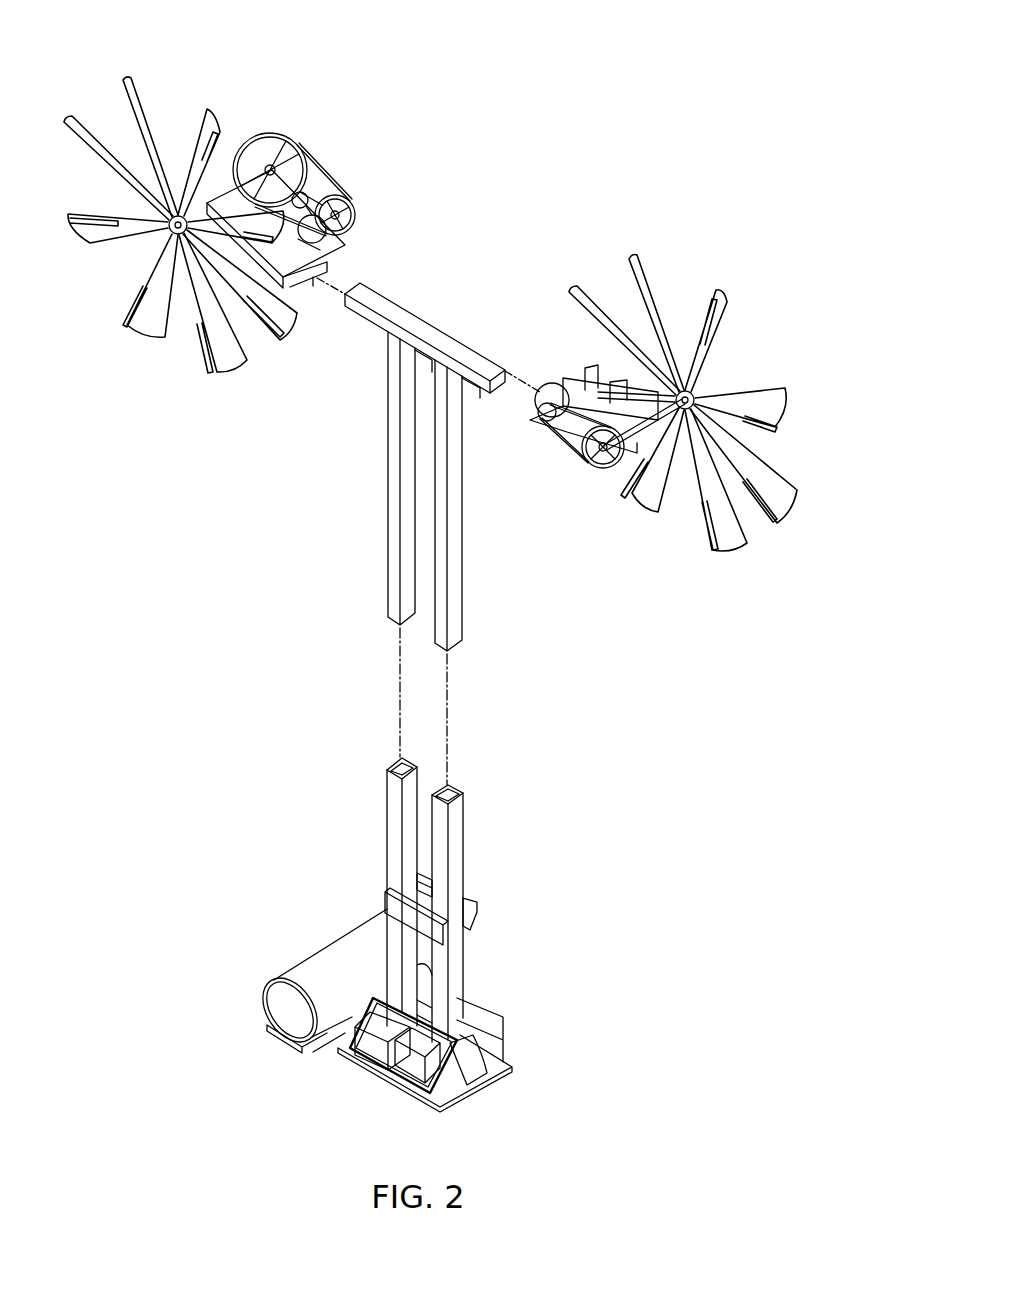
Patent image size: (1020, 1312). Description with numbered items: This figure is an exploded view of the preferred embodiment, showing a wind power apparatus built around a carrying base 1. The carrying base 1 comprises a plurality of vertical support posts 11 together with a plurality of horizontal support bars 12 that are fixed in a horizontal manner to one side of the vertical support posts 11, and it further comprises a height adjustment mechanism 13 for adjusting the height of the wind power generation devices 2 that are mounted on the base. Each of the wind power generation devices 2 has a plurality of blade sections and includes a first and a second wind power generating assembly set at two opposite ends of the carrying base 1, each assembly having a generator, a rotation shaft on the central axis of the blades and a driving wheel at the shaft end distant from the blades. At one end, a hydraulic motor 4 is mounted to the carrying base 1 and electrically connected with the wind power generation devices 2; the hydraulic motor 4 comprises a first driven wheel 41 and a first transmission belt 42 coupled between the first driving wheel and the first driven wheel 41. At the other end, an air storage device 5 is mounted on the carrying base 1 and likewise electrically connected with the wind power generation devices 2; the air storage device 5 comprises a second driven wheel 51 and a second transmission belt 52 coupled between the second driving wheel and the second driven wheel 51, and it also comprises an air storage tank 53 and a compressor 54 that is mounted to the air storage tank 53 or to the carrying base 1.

The carrying base 1 is at (228, 468).
The vertical support posts 11 is at (390, 582).
The horizontal support bars 12 is at (313, 277).
The height adjustment mechanism 13 is at (430, 873).
The wind power generation devices 2 is at (677, 282).
The hydraulic motor 4 is at (485, 560).
The first driven wheel 41 is at (537, 415).
The first transmission belt 42 is at (567, 443).
The air storage device 5 is at (430, 72).
The second driven wheel 51 is at (357, 200).
The second transmission belt 52 is at (297, 150).
The air storage tank 53 is at (305, 957).
The compressor 54 is at (327, 187).